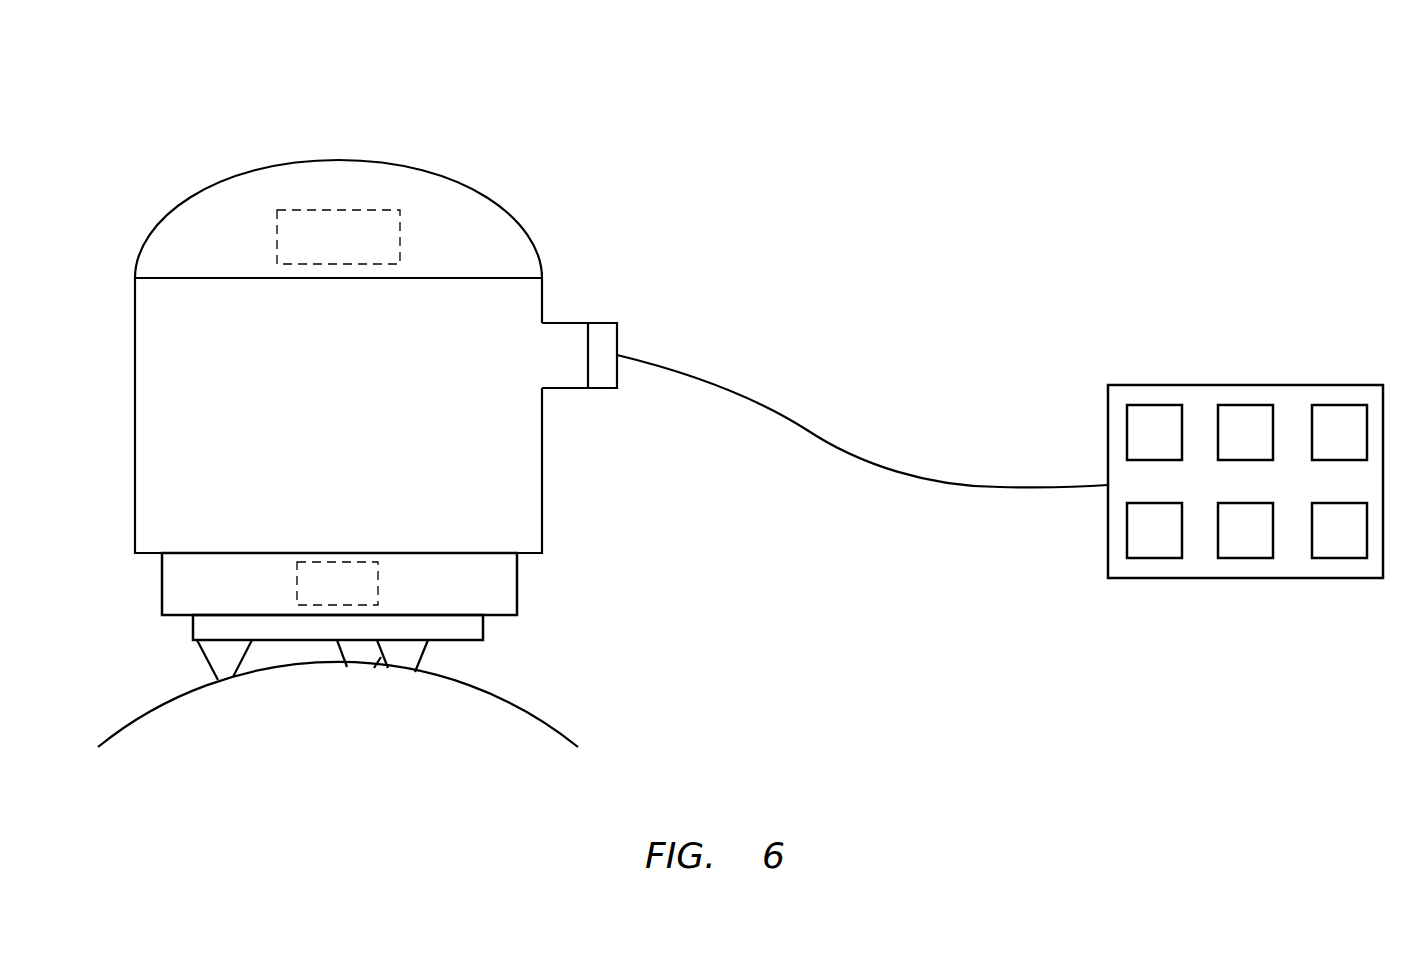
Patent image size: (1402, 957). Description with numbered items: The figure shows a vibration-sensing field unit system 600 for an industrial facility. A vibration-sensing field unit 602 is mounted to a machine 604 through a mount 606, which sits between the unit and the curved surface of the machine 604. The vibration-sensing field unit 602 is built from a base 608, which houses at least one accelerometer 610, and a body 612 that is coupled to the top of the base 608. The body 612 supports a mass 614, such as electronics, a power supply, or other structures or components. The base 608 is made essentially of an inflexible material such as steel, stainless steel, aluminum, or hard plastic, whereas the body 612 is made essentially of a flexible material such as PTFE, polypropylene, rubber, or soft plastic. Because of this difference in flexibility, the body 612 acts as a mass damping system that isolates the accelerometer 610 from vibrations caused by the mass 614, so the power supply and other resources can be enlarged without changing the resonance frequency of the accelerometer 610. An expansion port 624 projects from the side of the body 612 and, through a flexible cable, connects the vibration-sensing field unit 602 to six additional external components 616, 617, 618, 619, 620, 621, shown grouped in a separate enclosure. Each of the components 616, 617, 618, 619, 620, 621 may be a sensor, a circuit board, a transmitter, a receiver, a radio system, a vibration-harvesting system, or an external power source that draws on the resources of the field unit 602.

The vibration-sensing field unit system 600 is at (1243, 93).
The vibration-sensing field unit 602 is at (398, 130).
The machine 604 is at (358, 720).
The mount 606 is at (475, 625).
The base 608 is at (507, 588).
The accelerometer 610 is at (359, 597).
The body 612 is at (528, 493).
The mass 614 is at (317, 250).
The additional external component 616 is at (1134, 443).
The additional external component 617 is at (1225, 443).
The additional external component 618 is at (1319, 443).
The additional external component 619 is at (1134, 542).
The additional external component 620 is at (1225, 542).
The additional external component 621 is at (1319, 542).
The expansion port 624 is at (590, 305).